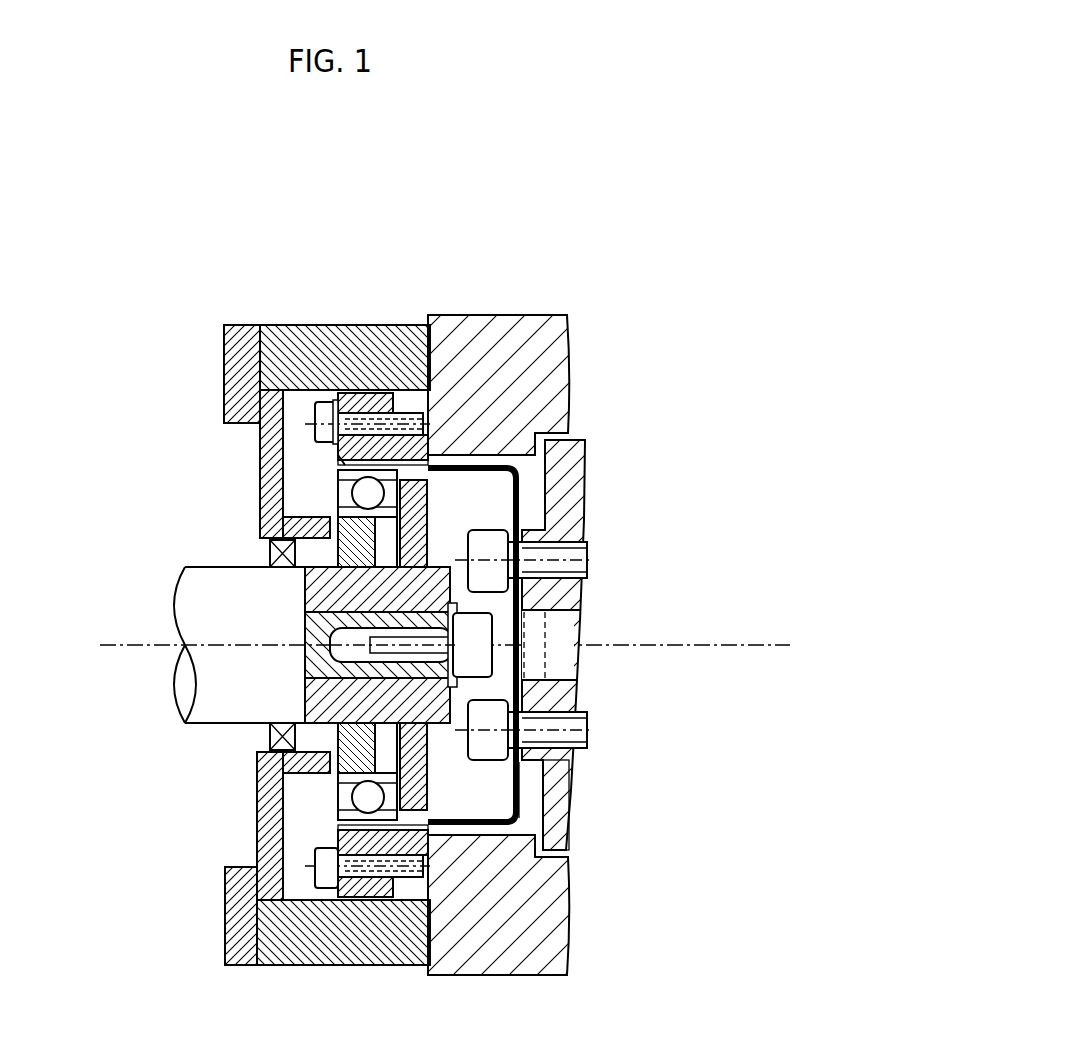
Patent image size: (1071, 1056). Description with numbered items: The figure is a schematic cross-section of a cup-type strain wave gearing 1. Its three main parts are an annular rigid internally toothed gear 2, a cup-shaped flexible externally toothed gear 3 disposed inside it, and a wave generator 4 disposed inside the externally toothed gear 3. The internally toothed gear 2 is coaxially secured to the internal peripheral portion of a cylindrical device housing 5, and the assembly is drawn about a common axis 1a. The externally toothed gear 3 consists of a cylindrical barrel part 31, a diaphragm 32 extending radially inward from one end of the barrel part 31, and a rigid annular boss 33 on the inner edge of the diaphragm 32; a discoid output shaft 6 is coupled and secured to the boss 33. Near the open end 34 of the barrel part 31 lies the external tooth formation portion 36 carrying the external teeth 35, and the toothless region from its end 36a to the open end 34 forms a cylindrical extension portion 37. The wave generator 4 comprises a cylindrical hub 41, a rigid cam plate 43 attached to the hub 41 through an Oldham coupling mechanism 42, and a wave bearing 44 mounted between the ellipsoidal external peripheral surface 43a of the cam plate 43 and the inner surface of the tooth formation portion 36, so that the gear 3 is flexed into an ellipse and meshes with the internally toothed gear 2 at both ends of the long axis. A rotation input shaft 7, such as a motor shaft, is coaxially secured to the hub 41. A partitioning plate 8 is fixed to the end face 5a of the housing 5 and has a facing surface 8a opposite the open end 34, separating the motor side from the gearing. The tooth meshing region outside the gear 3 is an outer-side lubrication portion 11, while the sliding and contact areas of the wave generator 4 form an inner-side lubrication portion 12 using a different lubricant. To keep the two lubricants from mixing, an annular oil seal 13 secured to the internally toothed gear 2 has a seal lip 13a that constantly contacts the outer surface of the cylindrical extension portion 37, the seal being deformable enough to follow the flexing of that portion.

The strain wave gearing 1 is at (374, 240).
The rotation axis 1a is at (120, 644).
The rigid internally toothed gear 2 is at (311, 357).
The flexible externally toothed gear 3 is at (448, 446).
The wave generator 4 is at (538, 645).
The device housing 5 is at (285, 596).
The end face 5a is at (300, 390).
The output shaft 6 is at (608, 645).
The rotation input shaft 7 is at (198, 557).
The partitioning plate 8 is at (222, 645).
The facing surface 8a is at (300, 420).
The outer-side lubrication portion 11 is at (318, 436).
The inner-side lubrication portion 12 is at (327, 487).
The oil seal 13 is at (288, 648).
The seal lip 13a is at (262, 472).
The cylindrical barrel part 31 is at (475, 836).
The diaphragm 32 is at (525, 790).
The boss 33 is at (541, 768).
The open end 34 is at (395, 671).
The external teeth 35 is at (320, 843).
The external tooth formation portion 36 is at (320, 906).
The end of external tooth formation portion 36a is at (335, 826).
The cylindrical extension portion 37 is at (322, 466).
The hub 41 is at (448, 700).
The Oldham coupling mechanism 42 is at (430, 787).
The rigid cam plate 43 is at (258, 669).
The ellipsoidal external peripheral surface 43a is at (340, 798).
The wave bearing 44 is at (300, 777).